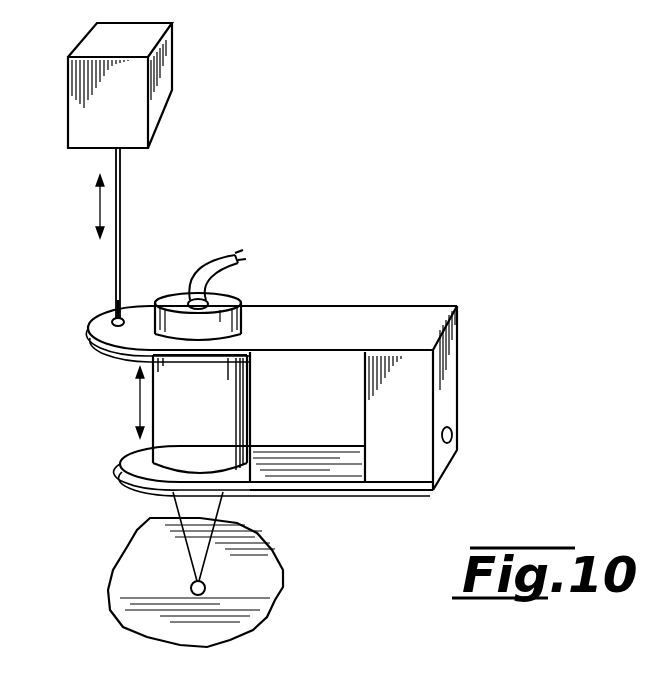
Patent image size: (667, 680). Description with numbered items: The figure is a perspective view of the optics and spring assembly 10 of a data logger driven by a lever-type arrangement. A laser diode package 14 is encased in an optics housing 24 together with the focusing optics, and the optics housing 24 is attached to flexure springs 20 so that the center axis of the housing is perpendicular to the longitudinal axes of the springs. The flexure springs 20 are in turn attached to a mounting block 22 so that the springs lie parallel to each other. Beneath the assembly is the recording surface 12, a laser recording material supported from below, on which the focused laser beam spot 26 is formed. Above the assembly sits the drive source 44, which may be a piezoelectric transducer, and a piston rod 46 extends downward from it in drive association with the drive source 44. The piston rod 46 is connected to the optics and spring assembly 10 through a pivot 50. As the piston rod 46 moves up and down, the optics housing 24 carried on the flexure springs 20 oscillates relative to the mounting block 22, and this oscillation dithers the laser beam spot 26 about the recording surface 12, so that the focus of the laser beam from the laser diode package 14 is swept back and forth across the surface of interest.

The optics and spring assembly 10 is at (388, 272).
The recording surface 12 is at (265, 577).
The laser diode package 14 is at (183, 297).
The flexure springs 20 is at (338, 333).
The mounting block 22 is at (447, 400).
The optics housing 24 is at (243, 407).
The laser beam spot 26 is at (195, 582).
The drive source 44 is at (147, 38).
The piston rod 46 is at (120, 193).
The pivot 50 is at (113, 302).